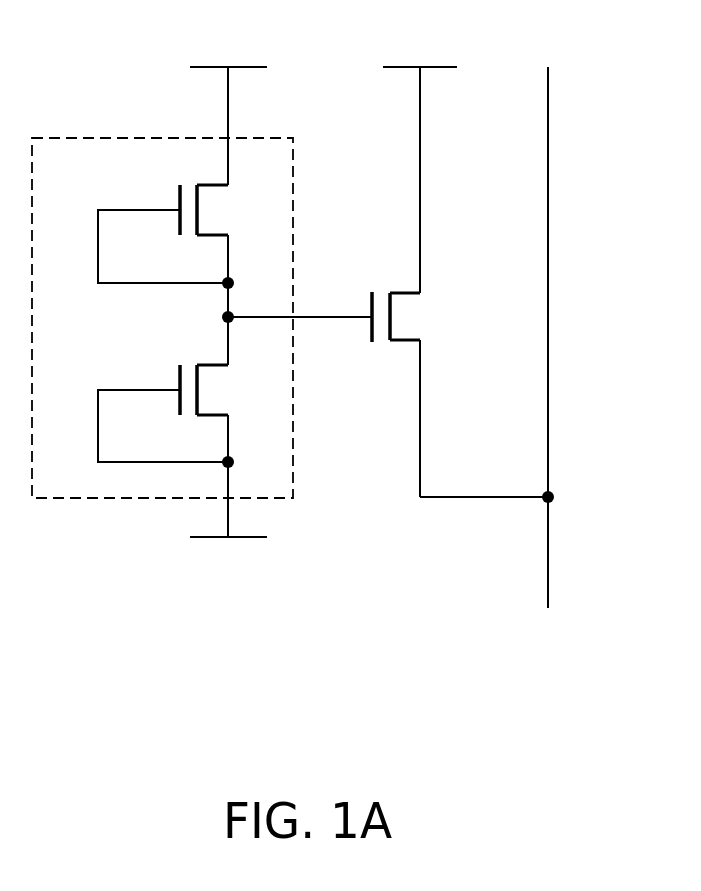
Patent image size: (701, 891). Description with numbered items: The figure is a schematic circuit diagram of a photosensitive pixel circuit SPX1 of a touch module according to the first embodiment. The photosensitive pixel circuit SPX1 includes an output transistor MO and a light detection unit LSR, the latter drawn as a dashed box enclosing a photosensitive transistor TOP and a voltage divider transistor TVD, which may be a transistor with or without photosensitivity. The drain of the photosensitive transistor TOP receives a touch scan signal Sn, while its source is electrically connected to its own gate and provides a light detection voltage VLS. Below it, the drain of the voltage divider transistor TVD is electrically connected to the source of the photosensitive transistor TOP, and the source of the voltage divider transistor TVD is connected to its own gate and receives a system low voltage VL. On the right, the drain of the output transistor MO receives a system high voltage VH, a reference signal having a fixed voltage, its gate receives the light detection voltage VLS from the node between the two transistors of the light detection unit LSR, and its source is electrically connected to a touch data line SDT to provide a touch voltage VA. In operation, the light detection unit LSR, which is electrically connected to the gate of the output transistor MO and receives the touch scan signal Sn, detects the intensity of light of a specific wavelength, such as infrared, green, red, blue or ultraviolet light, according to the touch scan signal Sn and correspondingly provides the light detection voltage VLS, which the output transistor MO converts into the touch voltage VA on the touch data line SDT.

The touch scan signal Sn is at (228, 105).
The system high voltage VH is at (420, 159).
The system low voltage VL is at (228, 523).
The touch data line SDT is at (548, 183).
The photosensitive transistor TOP is at (187, 251).
The voltage divider transistor TVD is at (187, 392).
The light detection voltage VLS is at (297, 301).
The output transistor MO is at (412, 394).
The touch voltage VA is at (487, 480).
The light detection unit LSR is at (100, 498).
The photosensitive pixel circuit SPX1 is at (677, 675).